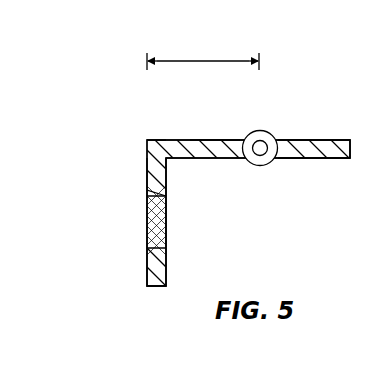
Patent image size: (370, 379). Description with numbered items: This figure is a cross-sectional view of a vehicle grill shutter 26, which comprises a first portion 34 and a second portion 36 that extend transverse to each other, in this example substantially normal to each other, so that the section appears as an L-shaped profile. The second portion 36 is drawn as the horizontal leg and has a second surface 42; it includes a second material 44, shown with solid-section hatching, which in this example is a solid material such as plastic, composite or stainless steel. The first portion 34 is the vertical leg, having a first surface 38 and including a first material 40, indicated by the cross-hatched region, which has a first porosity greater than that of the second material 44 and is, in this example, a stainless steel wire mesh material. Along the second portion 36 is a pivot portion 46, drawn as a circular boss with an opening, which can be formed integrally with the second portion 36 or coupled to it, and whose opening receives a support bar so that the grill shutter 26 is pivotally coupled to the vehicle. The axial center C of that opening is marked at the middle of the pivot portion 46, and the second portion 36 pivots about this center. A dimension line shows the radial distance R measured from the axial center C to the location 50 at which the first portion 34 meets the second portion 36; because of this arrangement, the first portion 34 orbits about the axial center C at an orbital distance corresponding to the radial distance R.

The grill shutter 26 is at (114, 86).
The second portion 36 is at (168, 139).
The location 50 is at (147, 142).
The first portion 34 is at (147, 178).
The first material 40 is at (147, 222).
The first surface 38 is at (147, 269).
The second material 44 is at (222, 140).
The second surface 42 is at (283, 140).
The pivot portion 46 is at (257, 131).
The axial center C is at (260, 152).
The radial distance R is at (203, 49).